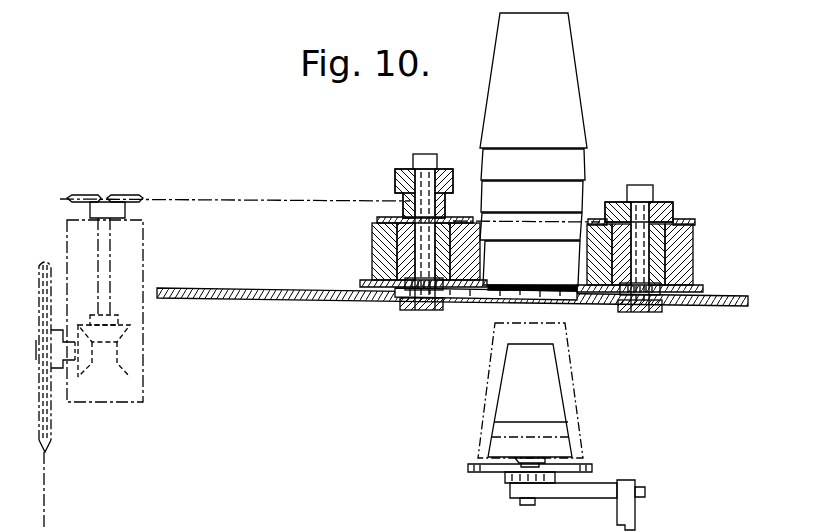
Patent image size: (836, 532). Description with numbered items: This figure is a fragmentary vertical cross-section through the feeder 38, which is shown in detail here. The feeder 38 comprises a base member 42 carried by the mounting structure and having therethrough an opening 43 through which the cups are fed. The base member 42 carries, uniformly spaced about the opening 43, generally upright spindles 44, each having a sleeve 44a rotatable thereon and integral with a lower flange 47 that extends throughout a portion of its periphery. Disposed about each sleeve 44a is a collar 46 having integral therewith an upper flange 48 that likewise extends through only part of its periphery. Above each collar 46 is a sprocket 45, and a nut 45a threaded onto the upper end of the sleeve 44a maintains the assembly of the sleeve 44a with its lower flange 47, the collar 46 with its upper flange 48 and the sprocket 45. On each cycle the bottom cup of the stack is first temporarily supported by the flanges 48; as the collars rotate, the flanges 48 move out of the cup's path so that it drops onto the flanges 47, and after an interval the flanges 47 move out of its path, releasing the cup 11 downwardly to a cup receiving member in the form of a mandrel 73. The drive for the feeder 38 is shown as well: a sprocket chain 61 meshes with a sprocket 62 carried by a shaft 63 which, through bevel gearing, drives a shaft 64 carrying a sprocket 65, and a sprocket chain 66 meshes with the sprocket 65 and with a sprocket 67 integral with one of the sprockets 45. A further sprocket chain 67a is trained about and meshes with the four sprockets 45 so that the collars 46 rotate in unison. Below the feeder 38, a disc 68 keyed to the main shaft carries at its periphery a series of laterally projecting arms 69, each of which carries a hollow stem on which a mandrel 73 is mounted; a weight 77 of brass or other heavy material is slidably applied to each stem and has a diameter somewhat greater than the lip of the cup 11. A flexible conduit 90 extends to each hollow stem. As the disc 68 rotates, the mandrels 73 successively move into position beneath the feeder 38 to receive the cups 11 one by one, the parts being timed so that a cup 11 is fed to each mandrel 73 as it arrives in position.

The cup 11 is at (580, 128).
The feeder 38 is at (457, 131).
The base member 42 is at (260, 288).
The opening 43 is at (492, 300).
The spindle 44 is at (430, 312).
The sleeve 44a is at (400, 303).
The sprocket 45 is at (378, 220).
The nut 45a is at (673, 202).
The collar 46 is at (372, 262).
The lower flange 47 is at (362, 282).
The upper flange 48 is at (380, 248).
The sprocket chain 61 is at (47, 480).
The sprocket 62 is at (48, 418).
The shaft 63 is at (72, 380).
The shaft 64 is at (115, 241).
The sprocket 65 is at (126, 192).
The sprocket chain 66 is at (275, 180).
The sprocket 67 is at (398, 195).
The sprocket chain 67a is at (550, 215).
The disc 68 is at (628, 483).
The arm 69 is at (568, 498).
The mandrel 73 is at (552, 405).
The weight 77 is at (595, 462).
The flexible conduit 90 is at (524, 505).